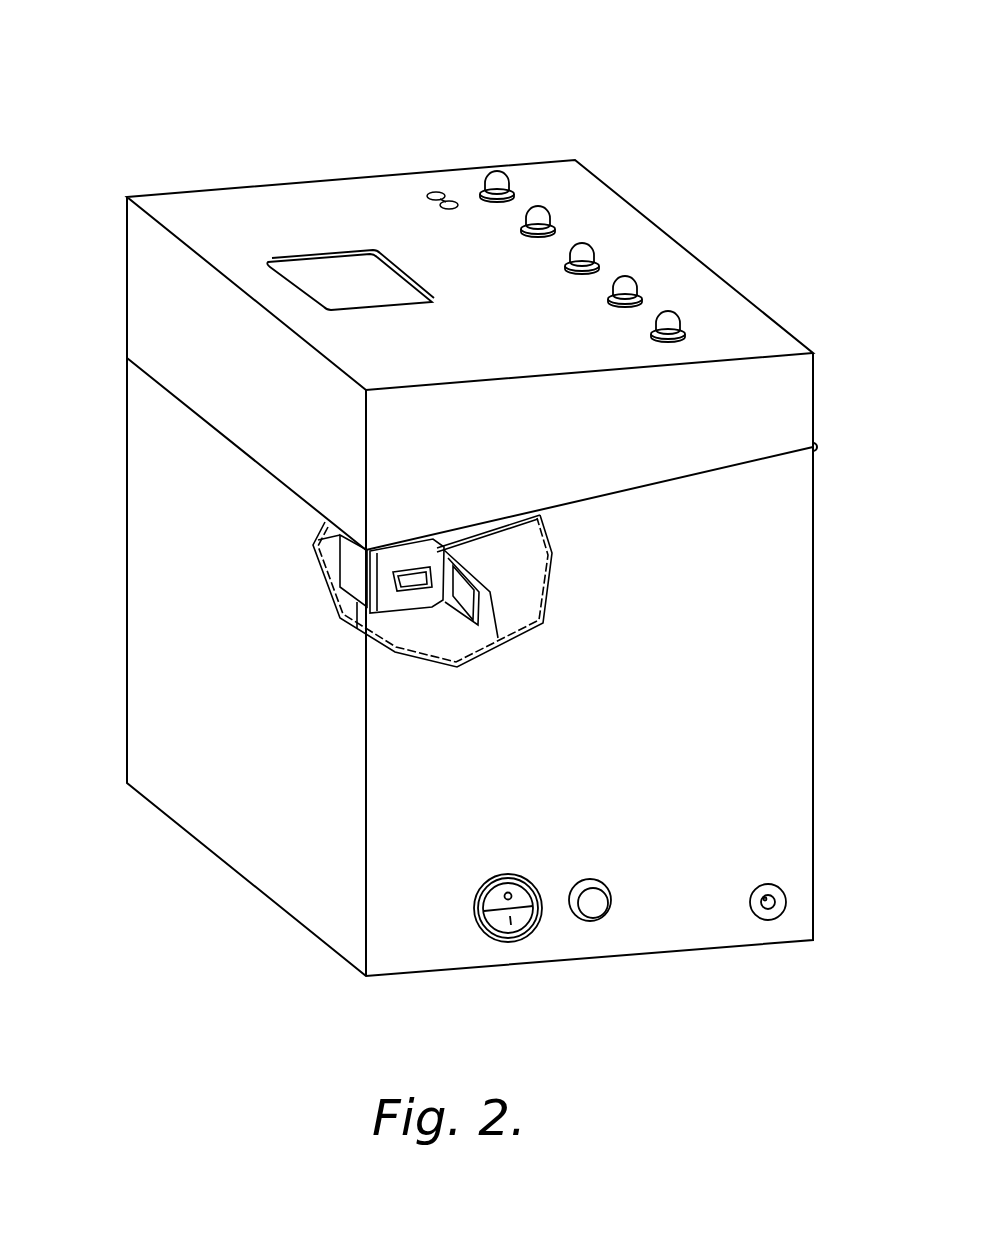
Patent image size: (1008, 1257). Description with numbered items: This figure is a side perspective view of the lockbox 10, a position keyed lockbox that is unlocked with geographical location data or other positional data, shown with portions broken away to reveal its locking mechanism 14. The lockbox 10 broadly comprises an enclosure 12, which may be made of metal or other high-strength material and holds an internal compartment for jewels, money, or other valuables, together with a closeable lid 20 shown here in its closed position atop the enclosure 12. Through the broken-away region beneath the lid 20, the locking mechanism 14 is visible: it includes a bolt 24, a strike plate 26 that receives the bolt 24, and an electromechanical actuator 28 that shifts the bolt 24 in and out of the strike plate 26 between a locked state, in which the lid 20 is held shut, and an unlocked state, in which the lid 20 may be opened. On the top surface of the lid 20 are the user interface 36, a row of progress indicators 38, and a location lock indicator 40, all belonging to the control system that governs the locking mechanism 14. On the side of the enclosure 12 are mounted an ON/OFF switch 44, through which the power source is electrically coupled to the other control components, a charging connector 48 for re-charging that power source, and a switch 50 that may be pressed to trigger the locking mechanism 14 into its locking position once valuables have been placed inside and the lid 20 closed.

The lockbox 10 is at (354, 104).
The enclosure 12 is at (163, 693).
The locking mechanism 14 is at (381, 623).
The lid 20 is at (263, 195).
The bolt 24 is at (417, 583).
The strike plate 26 is at (412, 556).
The electromechanical actuator 28 is at (355, 565).
The user interface 36 is at (365, 290).
The progress indicators 38 is at (548, 213).
The location lock indicator 40 is at (500, 182).
The ON/OFF switch 44 is at (497, 926).
The charging connector 48 is at (778, 912).
The switch 50 is at (597, 912).